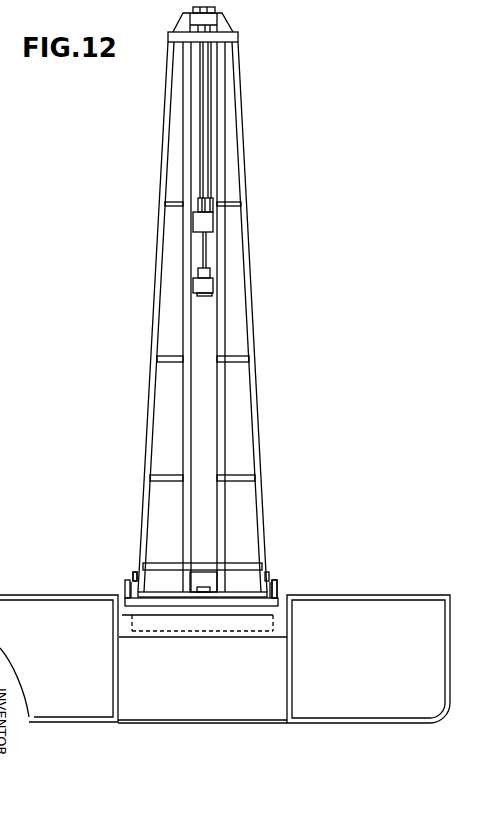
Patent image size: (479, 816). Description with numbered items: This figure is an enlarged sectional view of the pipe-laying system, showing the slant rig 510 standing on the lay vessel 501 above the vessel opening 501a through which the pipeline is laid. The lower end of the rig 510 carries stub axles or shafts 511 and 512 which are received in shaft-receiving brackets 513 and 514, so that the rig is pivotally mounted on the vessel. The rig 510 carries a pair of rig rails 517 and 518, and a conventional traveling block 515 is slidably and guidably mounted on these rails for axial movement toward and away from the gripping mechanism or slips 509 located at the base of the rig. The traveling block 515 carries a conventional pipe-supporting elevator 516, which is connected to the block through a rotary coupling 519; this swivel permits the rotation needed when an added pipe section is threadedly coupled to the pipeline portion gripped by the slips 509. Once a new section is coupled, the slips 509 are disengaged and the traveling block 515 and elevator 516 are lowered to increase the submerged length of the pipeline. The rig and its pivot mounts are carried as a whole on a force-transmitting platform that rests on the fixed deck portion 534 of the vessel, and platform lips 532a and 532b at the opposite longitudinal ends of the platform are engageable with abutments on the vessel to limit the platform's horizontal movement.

The lay vessel 501 is at (380, 595).
The vessel opening 501a is at (222, 698).
The gripping mechanism 509 is at (200, 573).
The slant rig 510 is at (253, 336).
The stub axle 511 is at (273, 580).
The stub axle 512 is at (135, 574).
The shaft-receiving bracket 513 is at (278, 592).
The shaft-receiving bracket 514 is at (125, 588).
The traveling block 515 is at (207, 222).
The elevator 516 is at (208, 285).
The rig rail 517 is at (221, 128).
The rig rail 518 is at (185, 118).
The rotary coupling 519 is at (201, 250).
The platform lip 532a is at (163, 614).
The platform lip 532b is at (249, 614).
The fixed deck portion 534 is at (288, 632).